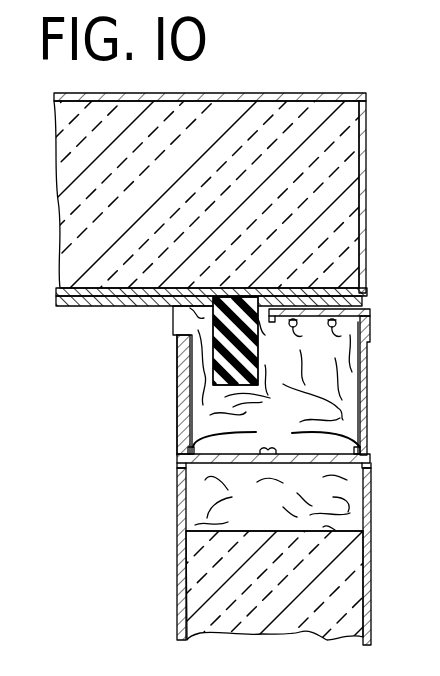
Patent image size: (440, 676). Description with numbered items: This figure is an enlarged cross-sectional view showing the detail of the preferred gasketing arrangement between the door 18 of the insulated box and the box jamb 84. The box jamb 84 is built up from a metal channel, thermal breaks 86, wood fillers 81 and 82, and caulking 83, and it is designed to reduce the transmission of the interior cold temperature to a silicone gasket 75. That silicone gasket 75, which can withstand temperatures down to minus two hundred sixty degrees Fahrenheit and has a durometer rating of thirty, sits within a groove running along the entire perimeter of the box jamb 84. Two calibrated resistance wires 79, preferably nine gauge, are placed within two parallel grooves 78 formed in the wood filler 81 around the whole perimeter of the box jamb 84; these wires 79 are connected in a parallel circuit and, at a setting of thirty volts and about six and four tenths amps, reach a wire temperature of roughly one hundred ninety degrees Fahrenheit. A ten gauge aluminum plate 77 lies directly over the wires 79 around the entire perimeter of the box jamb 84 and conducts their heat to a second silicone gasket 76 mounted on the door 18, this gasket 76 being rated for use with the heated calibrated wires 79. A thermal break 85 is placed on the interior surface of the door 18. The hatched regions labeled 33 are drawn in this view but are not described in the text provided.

The door 18 is at (203, 97).
The core material 33 is at (220, 376).
The silicone gasket 75 is at (213, 345).
The silicone gasket 76 is at (319, 299).
The aluminum plate 77 is at (363, 310).
The parallel grooves 78 is at (337, 323).
The calibrated resistance wires 79 is at (335, 328).
The wood filler 81 is at (346, 411).
The wood filler 82 is at (274, 503).
The caulking 83 is at (177, 466).
The box jamb 84 is at (371, 594).
The thermal break 85 is at (152, 303).
The thermal breaks 86 is at (177, 372).